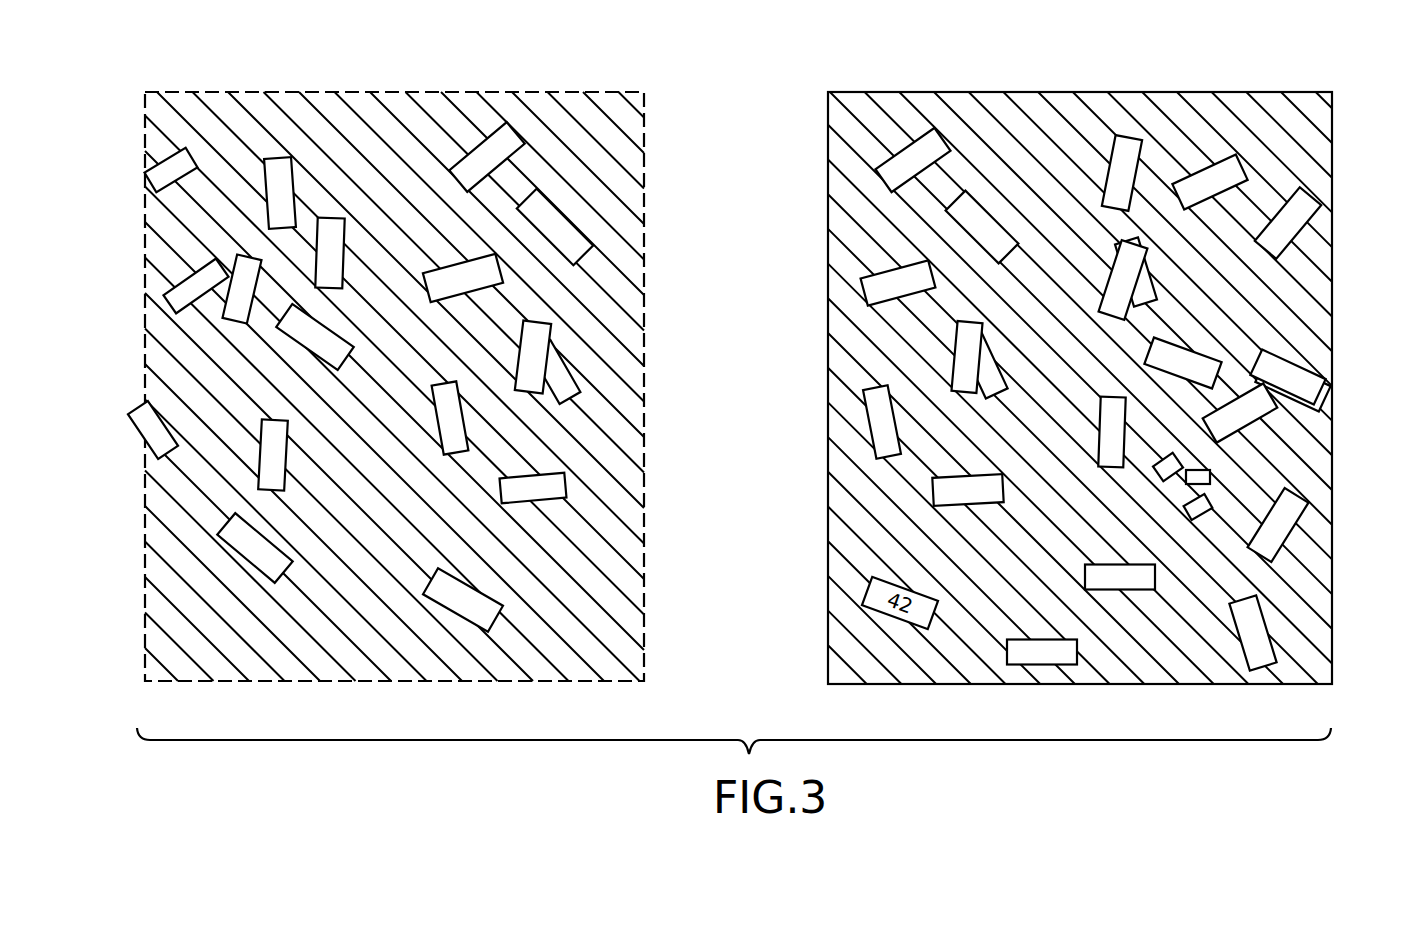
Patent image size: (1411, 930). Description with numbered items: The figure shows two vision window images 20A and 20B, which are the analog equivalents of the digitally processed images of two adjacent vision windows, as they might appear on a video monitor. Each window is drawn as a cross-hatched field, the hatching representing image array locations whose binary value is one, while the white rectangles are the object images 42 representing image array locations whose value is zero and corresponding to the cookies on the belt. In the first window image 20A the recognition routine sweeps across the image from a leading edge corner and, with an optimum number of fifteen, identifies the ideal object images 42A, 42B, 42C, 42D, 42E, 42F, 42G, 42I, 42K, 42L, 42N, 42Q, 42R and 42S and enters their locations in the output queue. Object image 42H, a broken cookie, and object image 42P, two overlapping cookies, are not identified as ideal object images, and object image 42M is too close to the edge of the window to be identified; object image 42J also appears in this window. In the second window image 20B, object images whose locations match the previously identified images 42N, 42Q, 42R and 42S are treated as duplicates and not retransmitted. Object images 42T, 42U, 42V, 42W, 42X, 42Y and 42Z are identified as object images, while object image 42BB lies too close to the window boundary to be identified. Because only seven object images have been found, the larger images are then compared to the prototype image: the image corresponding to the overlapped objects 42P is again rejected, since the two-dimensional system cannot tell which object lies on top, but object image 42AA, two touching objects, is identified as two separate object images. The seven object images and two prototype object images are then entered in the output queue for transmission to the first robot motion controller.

The vision window image 20A is at (846, 92).
The vision window image 20B is at (541, 91).
The object images 42 is at (512, 153).
The object image 42A is at (1288, 223).
The object image 42B is at (1290, 381).
The object image 42C is at (1278, 525).
The object image 42D is at (1252, 632).
The object image 42E is at (1240, 412).
The object image 42F is at (1209, 182).
The object image 42G is at (1182, 363).
The object image 42H is at (1180, 460).
The object image 42I is at (1120, 577).
The object image 42J is at (1111, 432).
The object image 42K is at (1128, 278).
The object image 42L is at (1122, 173).
The object image 42M is at (1042, 652).
The object image 42N is at (752, 489).
The object image 42P is at (761, 362).
The object image 42Q is at (768, 227).
The object image 42R is at (699, 157).
The object image 42S is at (679, 280).
The object image 42T is at (666, 419).
The object image 42U is at (463, 599).
The object image 42V is at (314, 337).
The object image 42W is at (147, 432).
The object image 42X is at (280, 193).
The object image 42Y is at (273, 454).
The object image 42Z is at (254, 548).
The object image 42AA is at (232, 320).
The object image 42BB is at (150, 172).